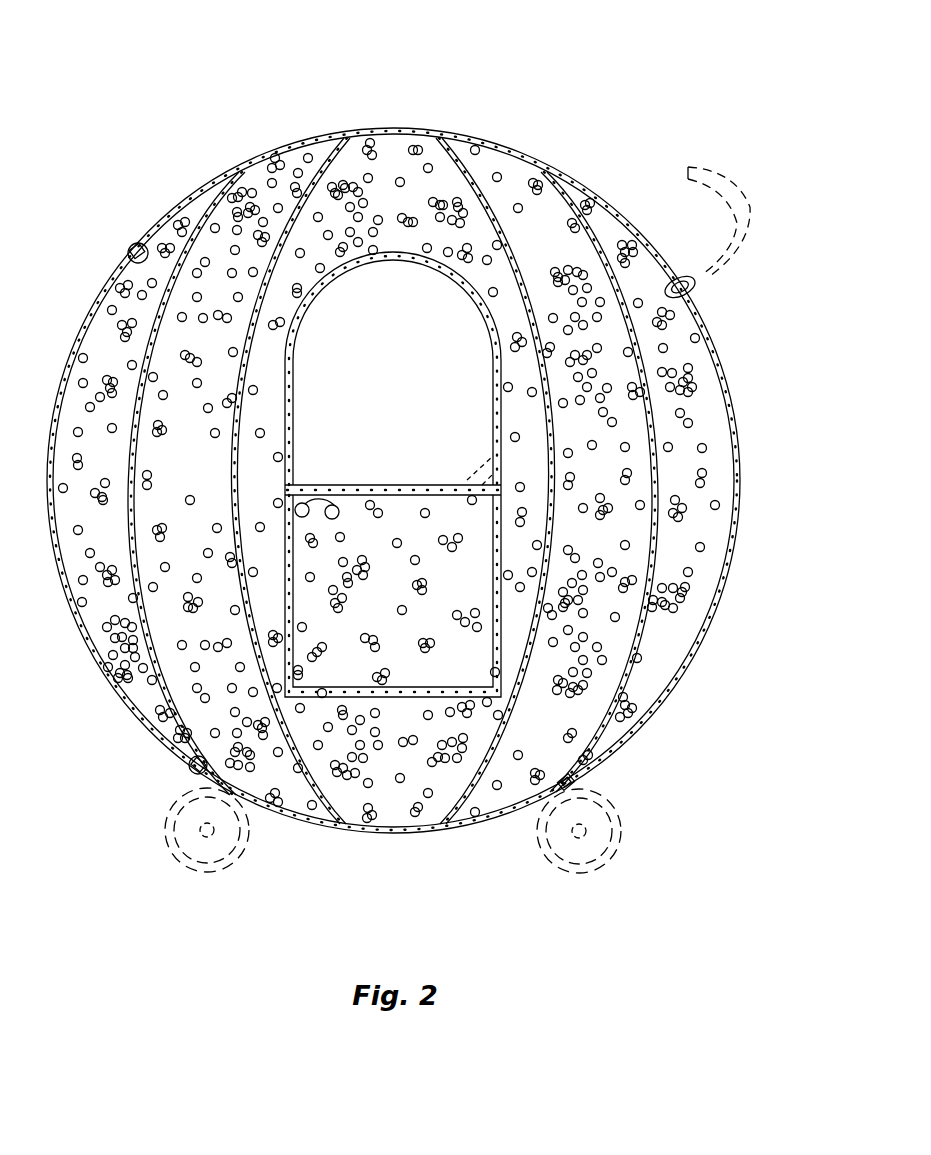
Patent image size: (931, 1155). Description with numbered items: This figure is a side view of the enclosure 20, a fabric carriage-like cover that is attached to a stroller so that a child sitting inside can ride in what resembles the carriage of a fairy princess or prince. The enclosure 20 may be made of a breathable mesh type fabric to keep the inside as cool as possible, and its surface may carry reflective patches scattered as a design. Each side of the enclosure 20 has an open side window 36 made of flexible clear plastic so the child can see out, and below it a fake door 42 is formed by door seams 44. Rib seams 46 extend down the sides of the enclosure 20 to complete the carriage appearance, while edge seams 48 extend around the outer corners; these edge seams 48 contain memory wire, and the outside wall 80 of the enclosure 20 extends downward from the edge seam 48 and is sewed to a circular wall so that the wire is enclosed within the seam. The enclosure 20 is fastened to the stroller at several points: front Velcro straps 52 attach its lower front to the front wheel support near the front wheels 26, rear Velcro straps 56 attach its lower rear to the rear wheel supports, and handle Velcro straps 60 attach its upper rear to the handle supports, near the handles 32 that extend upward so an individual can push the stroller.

The enclosure 20 is at (552, 116).
The front wheels 26 is at (187, 867).
The handles 32 is at (743, 192).
The open side windows 36 is at (380, 365).
The fake door 42 is at (379, 595).
The door seams 44 is at (345, 485).
The rib seams 46 is at (133, 508).
The edge seams 48 is at (270, 152).
The front Velcro straps 52 is at (195, 774).
The rear Velcro straps 56 is at (574, 787).
The handle Velcro straps 60 is at (683, 278).
The outside wall 80 is at (585, 482).